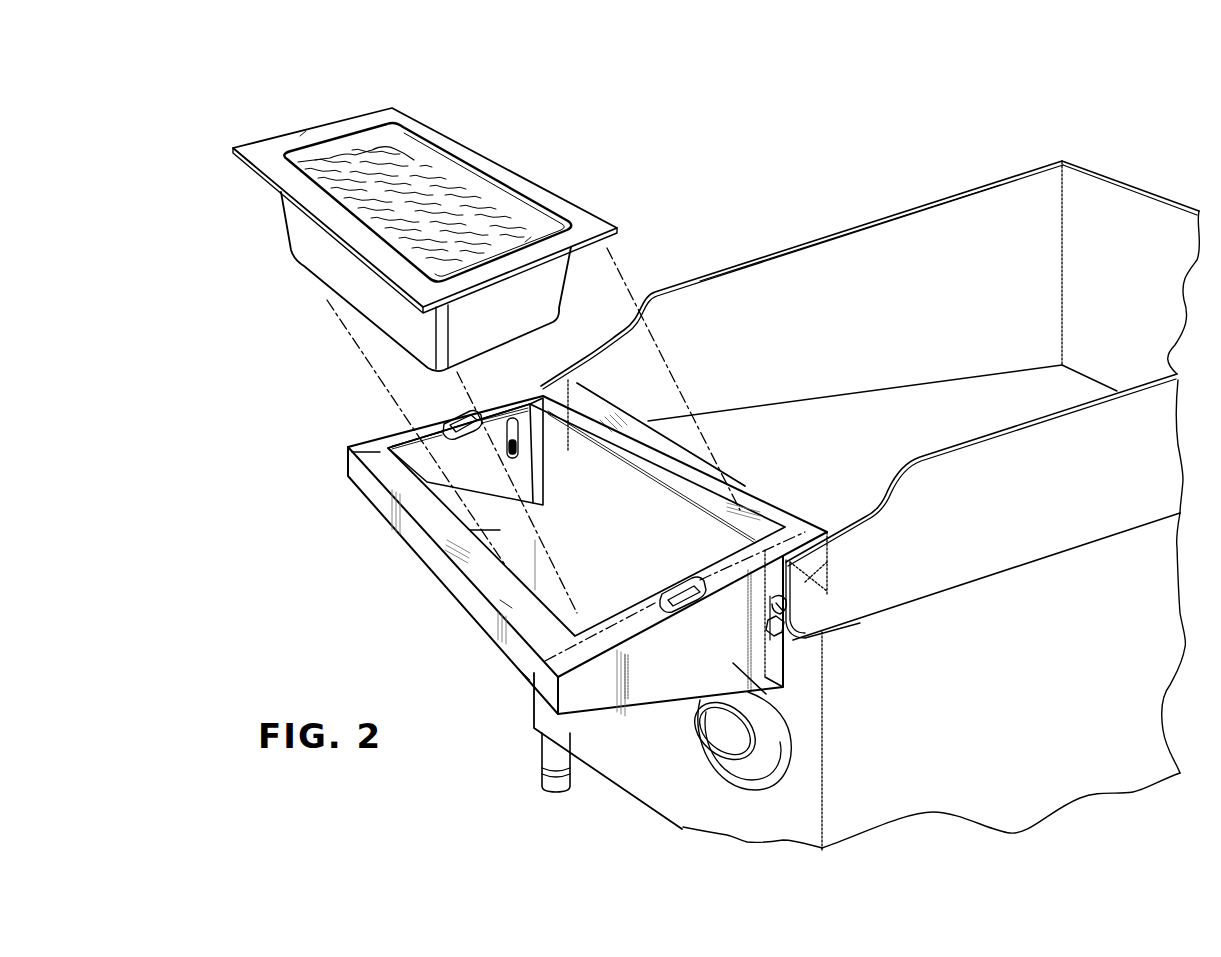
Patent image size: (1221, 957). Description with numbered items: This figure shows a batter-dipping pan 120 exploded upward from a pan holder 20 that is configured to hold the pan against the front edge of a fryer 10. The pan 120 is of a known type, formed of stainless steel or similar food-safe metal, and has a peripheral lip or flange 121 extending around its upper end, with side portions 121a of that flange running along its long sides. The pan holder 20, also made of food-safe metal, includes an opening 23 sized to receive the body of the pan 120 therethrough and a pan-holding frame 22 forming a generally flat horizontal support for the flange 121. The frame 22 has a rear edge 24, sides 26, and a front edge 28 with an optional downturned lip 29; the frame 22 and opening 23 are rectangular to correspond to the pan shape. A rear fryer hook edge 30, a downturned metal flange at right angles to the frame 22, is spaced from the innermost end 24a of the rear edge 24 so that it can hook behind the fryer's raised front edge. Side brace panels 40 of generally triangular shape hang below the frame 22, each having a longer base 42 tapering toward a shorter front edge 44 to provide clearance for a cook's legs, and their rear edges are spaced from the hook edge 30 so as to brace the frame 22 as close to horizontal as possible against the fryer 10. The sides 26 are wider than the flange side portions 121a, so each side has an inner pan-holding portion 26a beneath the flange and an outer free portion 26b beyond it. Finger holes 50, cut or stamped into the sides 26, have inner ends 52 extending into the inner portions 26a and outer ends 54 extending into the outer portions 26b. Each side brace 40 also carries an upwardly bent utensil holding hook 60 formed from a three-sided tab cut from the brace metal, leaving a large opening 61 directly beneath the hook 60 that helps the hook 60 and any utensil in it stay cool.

The fryer 10 is at (1090, 158).
The pan holder 20 is at (365, 437).
The pan-holding frame 22 is at (416, 500).
The opening 23 is at (499, 525).
The rear edge 24 is at (733, 488).
The innermost end of rear edge 24a is at (787, 490).
The sides 26 is at (408, 433).
The inner pan-holding portion 26a is at (618, 613).
The outer free portion 26b is at (640, 623).
The front edge 28 is at (508, 592).
The downturned lip 29 is at (522, 652).
The rear fryer hook edge 30 is at (836, 575).
The side brace panels 40 is at (407, 458).
The longer bases 42 is at (575, 380).
The shorter front edge 44 is at (548, 700).
The finger holes 50 is at (455, 417).
The inner ends of finger holes 52 is at (683, 590).
The outer ends of finger holes 54 is at (713, 592).
The utensil holding hooks 60 is at (806, 597).
The opening in brace metal 61 is at (795, 628).
The batter-dipping pan 120 is at (344, 150).
The peripheral lip or flange 121 is at (482, 165).
The side portions of flange 121a is at (302, 133).